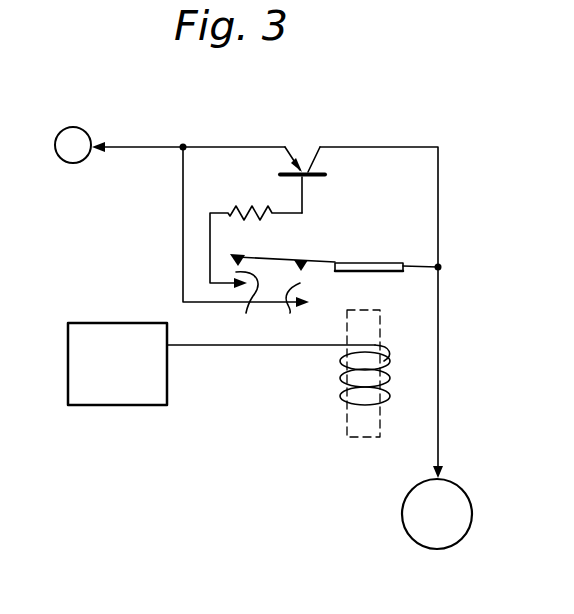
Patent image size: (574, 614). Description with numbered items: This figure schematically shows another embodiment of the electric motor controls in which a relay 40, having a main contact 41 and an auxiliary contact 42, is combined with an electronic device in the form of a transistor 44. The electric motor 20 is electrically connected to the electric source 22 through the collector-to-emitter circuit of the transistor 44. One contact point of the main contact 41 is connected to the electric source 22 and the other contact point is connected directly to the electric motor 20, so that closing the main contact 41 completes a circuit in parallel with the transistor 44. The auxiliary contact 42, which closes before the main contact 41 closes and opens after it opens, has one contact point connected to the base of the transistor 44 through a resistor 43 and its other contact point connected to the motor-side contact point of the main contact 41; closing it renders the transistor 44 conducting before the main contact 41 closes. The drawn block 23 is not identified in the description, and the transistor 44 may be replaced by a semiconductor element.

The electric motor 20 is at (472, 501).
The electric source 22 is at (77, 126).
The control unit 23 is at (115, 321).
The relay 40 is at (404, 352).
The main contact 41 is at (295, 303).
The auxiliary contact 42 is at (235, 299).
The resistor 43 is at (250, 210).
The transistor 44 is at (299, 158).